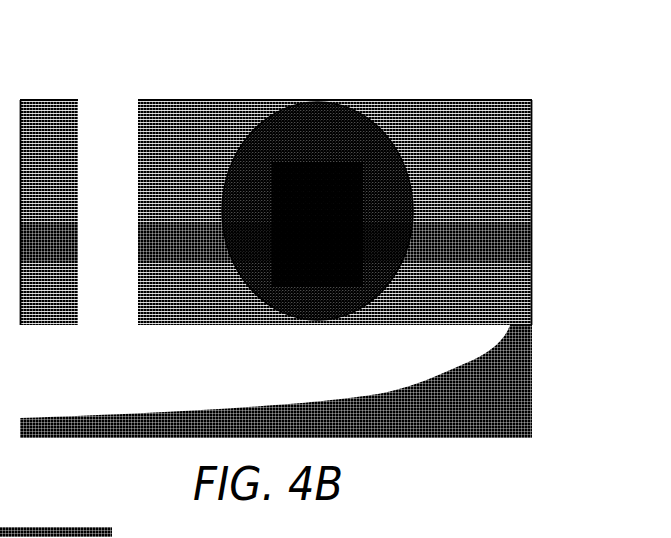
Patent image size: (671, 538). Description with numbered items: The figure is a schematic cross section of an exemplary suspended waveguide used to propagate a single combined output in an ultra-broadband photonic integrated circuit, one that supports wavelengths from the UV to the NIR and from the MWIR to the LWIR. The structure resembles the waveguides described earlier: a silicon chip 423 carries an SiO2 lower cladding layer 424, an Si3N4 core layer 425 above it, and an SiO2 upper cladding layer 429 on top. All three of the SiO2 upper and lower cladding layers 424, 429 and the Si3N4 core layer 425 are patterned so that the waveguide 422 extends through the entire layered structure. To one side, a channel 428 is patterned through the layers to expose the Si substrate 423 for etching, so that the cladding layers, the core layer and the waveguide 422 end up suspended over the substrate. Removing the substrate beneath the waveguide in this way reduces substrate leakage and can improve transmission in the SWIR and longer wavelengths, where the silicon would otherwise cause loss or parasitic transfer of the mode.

The waveguide 422 is at (332, 93).
The silicon chip 423 is at (542, 381).
The SiO2 lower cladding layer 424 is at (542, 298).
The Si3N4 core layer 425 is at (542, 233).
The channel 428 is at (131, 86).
The SiO2 upper cladding layer 429 is at (542, 161).